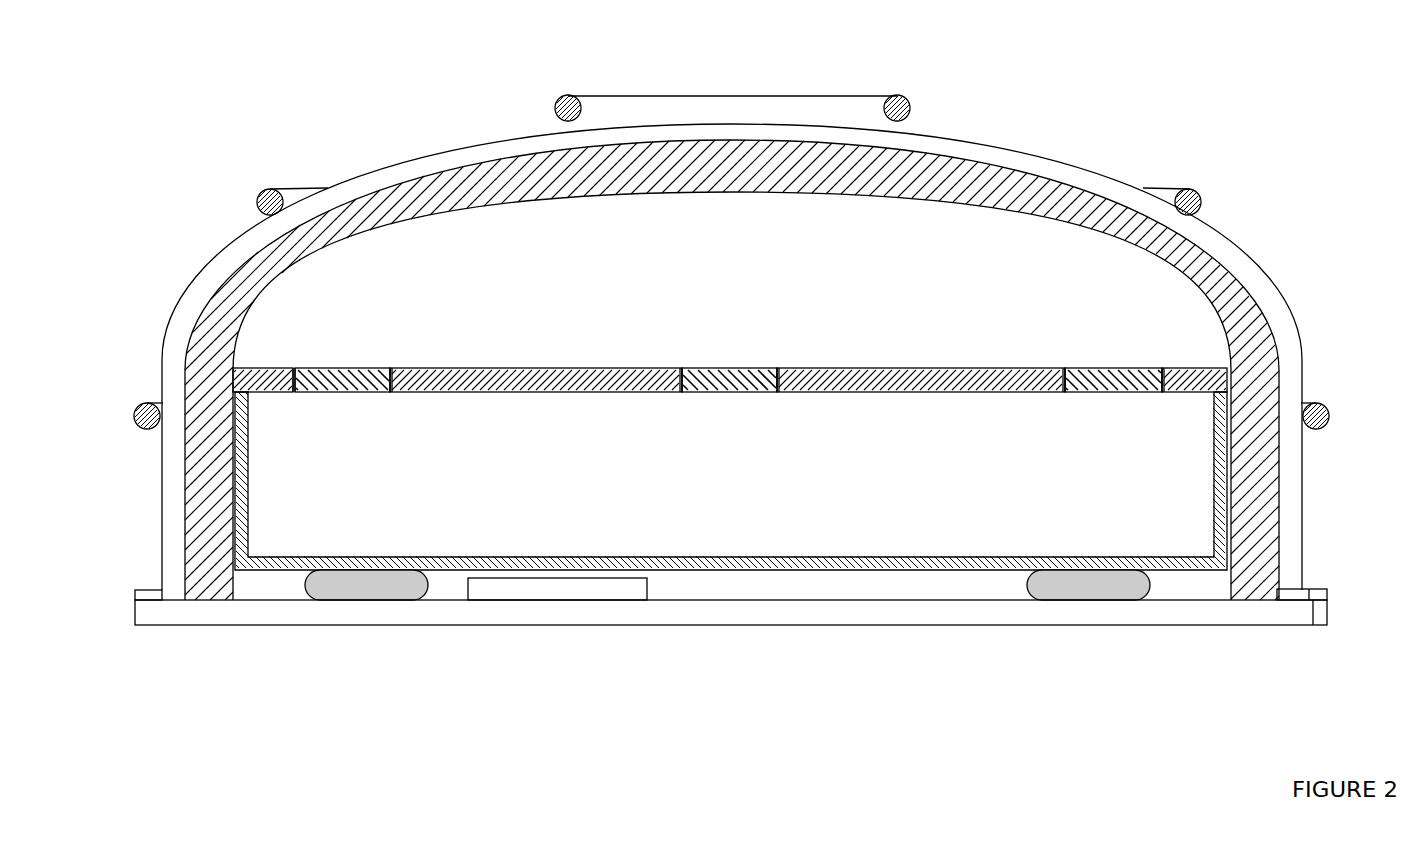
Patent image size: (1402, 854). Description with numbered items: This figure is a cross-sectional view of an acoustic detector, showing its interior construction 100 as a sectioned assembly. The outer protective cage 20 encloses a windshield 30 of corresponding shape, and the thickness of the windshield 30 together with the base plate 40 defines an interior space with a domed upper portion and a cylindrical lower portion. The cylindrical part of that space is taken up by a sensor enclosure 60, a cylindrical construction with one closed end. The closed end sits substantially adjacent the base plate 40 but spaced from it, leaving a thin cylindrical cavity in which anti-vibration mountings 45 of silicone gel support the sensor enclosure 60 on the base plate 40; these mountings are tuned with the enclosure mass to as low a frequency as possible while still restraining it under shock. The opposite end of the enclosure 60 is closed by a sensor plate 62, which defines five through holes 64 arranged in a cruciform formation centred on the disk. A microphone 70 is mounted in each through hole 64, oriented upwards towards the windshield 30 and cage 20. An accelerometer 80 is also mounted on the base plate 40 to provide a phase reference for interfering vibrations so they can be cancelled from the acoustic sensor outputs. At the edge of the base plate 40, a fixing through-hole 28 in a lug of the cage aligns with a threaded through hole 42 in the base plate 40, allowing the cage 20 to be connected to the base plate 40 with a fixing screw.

The inertial measurement system 100 is at (385, 717).
The protective cage 20 is at (450, 134).
The windshield 30 is at (268, 242).
The sensor enclosure 60 is at (1212, 498).
The sensor plate 62 is at (605, 368).
The microphone 70 is at (343, 368).
The through holes 64 is at (300, 380).
The anti-vibration mountings 45 is at (364, 600).
The accelerometer 80 is at (648, 590).
The base plate 40 is at (965, 613).
The threaded through holes 42 is at (1313, 613).
The fixing through-hole 28 is at (1312, 597).